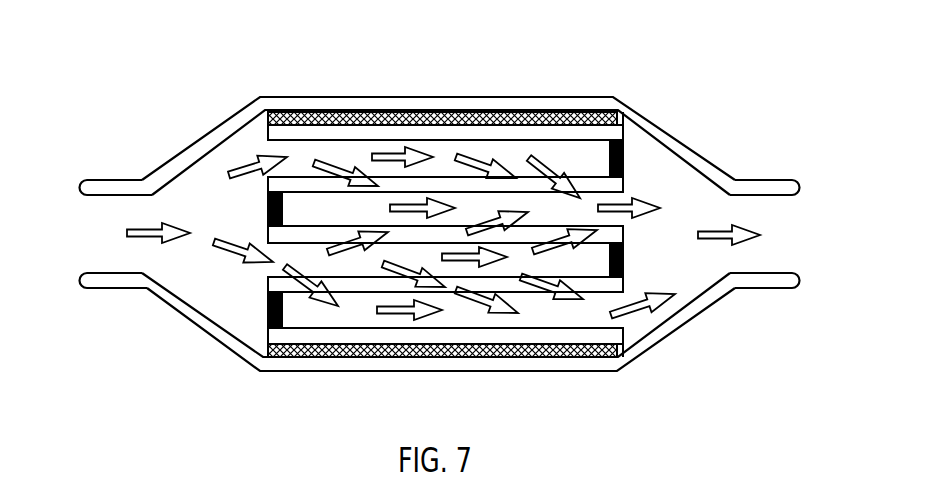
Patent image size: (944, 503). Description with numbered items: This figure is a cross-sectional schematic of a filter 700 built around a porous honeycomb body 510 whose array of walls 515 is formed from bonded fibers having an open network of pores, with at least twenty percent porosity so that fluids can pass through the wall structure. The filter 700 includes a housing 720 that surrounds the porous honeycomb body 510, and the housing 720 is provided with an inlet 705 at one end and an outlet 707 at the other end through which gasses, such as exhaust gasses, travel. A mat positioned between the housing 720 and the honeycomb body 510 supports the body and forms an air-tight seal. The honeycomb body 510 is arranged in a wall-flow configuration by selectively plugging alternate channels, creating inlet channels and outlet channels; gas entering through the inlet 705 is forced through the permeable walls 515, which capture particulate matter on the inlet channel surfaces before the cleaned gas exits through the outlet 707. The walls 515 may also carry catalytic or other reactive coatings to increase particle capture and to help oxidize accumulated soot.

The filter 700 is at (709, 88).
The inlet 705 is at (113, 180).
The outlet 707 is at (762, 180).
The porous honeycomb body 510 is at (350, 135).
The walls 515 is at (302, 183).
The housing 720 is at (220, 133).